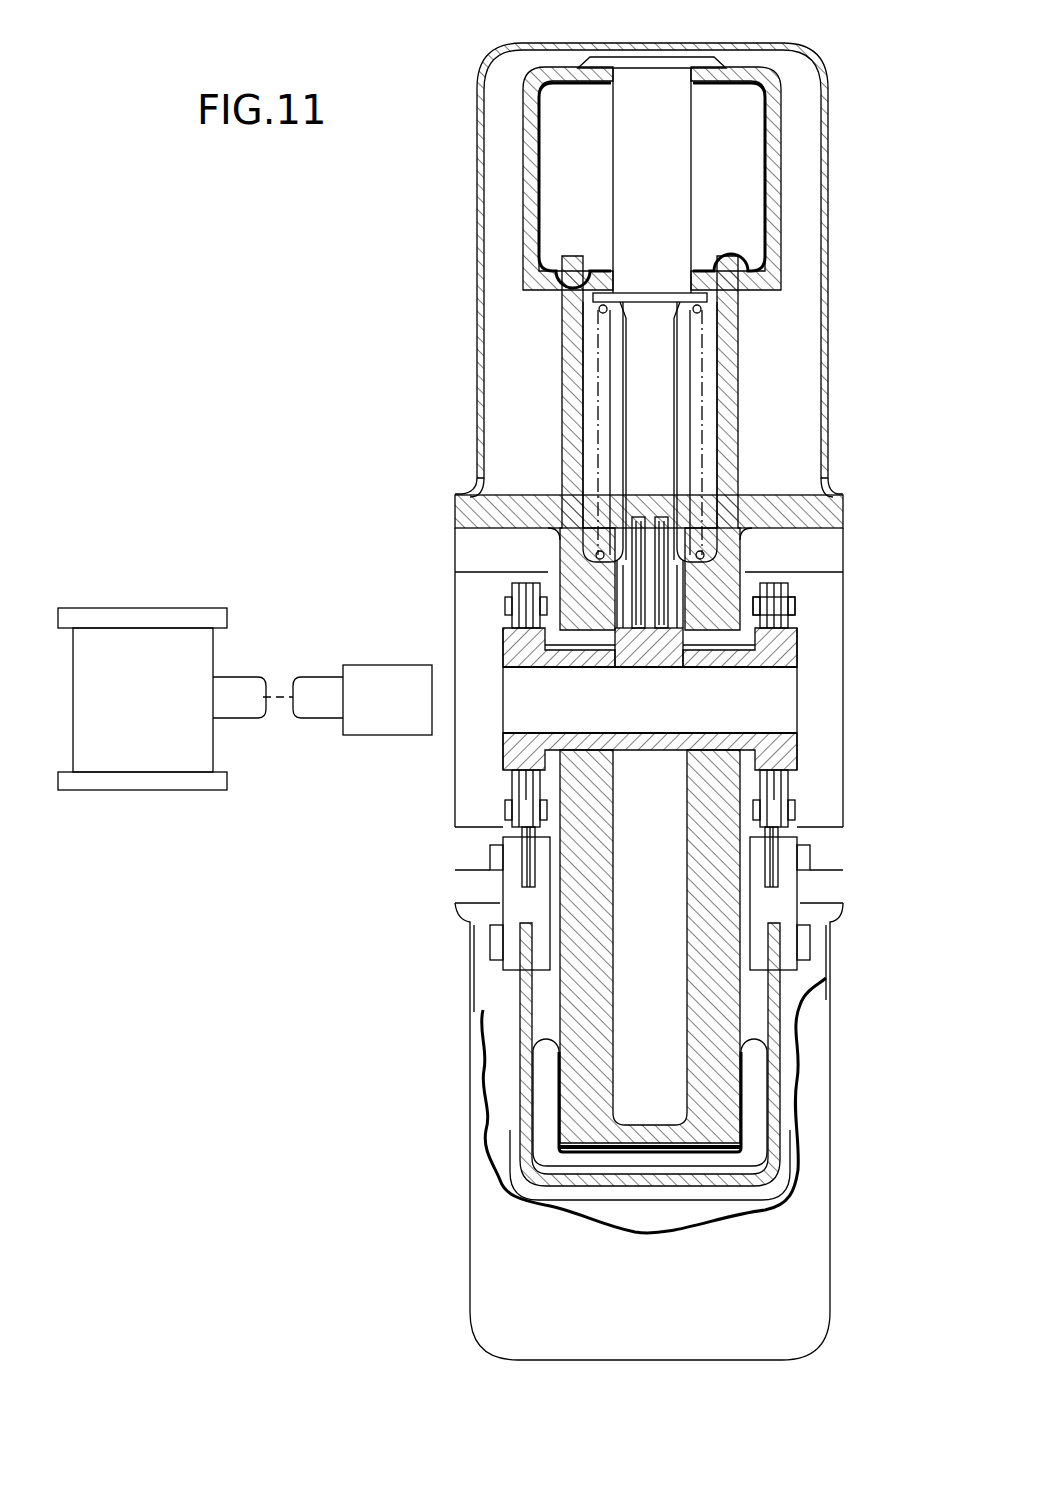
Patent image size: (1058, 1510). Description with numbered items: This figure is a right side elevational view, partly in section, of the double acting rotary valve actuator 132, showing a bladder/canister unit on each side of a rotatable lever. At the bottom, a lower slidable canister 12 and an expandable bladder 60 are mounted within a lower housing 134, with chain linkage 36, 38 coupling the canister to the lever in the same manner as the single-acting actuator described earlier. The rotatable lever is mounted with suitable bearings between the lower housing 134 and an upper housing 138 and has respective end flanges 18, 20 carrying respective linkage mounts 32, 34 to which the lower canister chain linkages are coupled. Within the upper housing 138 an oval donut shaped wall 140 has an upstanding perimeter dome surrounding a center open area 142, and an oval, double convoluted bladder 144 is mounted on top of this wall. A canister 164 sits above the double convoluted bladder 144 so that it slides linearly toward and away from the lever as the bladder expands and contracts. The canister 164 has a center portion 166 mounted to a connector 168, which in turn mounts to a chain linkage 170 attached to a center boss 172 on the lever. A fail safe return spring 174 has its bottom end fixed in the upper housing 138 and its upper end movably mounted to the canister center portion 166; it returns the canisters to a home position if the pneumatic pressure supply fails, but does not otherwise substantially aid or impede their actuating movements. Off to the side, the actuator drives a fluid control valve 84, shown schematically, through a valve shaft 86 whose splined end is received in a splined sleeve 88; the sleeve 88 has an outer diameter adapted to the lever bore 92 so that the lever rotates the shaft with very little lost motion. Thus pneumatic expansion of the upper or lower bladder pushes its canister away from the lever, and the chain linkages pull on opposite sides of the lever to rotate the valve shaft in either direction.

The lower slidable canister 12 is at (780, 1140).
The end flange 18 is at (503, 650).
The end flange 20 is at (788, 650).
The linkage mount 32 is at (527, 583).
The linkage mount 34 is at (773, 583).
The chain linkage 36 is at (522, 790).
The chain linkage 38 is at (783, 780).
The expandable bladder 60 is at (760, 1082).
The fluid control valve 84 is at (148, 740).
The valve shaft 86 is at (318, 683).
The splined sleeve 88 is at (378, 705).
The lever bore 92 is at (608, 714).
The double acting rotary valve actuator 132 is at (265, 326).
The lower housing 134 is at (845, 853).
The upper housing 138 is at (845, 693).
The oval donut shaped wall 140 is at (567, 350).
The center open area 142 is at (590, 398).
The double convoluted bladder 144 is at (746, 203).
The canister 164 is at (784, 148).
The center portion 166 is at (657, 85).
The connector 168 is at (633, 340).
The chain linkage 170 is at (790, 607).
The center boss 172 is at (618, 643).
The fail safe return spring 174 is at (600, 452).